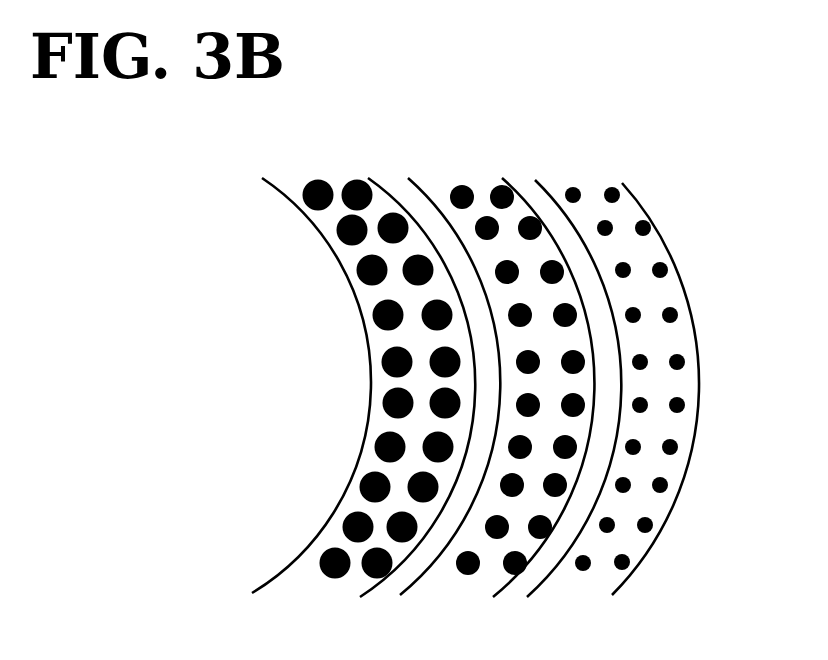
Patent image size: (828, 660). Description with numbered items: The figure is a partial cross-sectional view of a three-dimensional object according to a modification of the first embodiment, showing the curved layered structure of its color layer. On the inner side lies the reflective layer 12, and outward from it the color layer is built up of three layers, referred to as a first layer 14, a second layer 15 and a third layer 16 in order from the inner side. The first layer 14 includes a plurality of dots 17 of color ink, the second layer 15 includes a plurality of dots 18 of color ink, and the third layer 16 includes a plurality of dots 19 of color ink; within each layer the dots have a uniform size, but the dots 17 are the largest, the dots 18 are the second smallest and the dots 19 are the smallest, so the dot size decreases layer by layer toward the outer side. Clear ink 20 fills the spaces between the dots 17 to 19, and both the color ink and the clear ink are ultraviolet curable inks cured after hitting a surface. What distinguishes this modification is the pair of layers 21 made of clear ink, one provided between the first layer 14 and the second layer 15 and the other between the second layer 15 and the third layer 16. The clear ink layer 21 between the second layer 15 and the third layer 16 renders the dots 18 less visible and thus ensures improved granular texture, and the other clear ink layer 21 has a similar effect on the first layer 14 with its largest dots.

The reflective layer 12 is at (311, 385).
The first layer 14 is at (310, 131).
The second layer 15 is at (453, 131).
The third layer 16 is at (562, 131).
The dots of color ink 17 is at (358, 357).
The dots of color ink 18 is at (495, 355).
The dots of color ink 19 is at (606, 353).
The clear ink 20 is at (514, 357).
The clear ink layer 21 is at (510, 344).